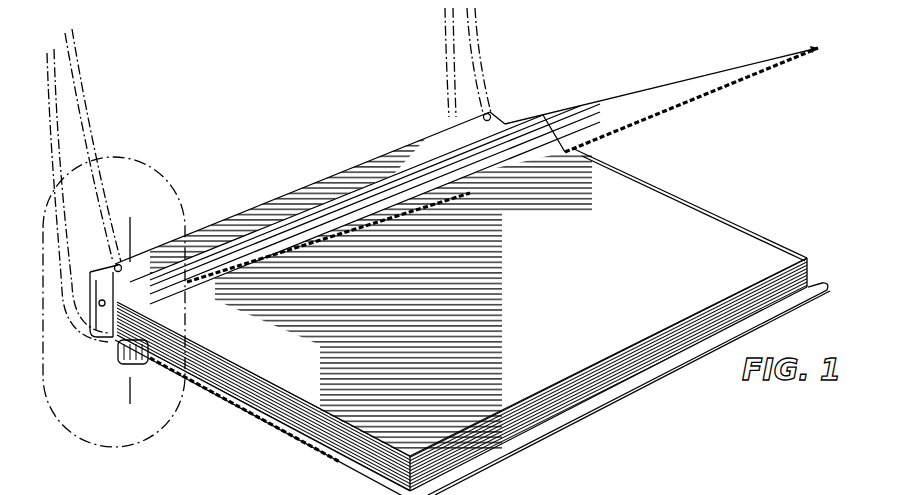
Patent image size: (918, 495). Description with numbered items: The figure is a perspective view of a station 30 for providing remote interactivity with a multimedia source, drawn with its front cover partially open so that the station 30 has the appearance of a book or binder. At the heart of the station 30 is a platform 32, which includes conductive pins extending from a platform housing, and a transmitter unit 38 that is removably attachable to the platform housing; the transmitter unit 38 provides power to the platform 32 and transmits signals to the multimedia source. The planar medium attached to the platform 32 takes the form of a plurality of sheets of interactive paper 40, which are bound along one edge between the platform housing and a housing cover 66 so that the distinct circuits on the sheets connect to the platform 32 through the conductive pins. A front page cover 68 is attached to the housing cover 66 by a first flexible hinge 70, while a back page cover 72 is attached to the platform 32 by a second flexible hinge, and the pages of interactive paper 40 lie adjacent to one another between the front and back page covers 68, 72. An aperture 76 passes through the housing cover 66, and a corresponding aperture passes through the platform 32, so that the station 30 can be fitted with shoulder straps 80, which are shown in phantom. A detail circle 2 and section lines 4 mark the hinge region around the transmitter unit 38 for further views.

The detail area 2 is at (168, 420).
The section line 4 is at (152, 222).
The station 30 is at (658, 63).
The platform 32 is at (251, 200).
The transmitter unit 38 is at (110, 370).
The sheets of interactive paper 40 is at (622, 342).
The housing cover 66 is at (440, 140).
The front page cover 68 is at (782, 66).
The first flexible hinge 70 is at (518, 124).
The back page cover 72 is at (806, 292).
The aperture 76 is at (488, 112).
The shoulder straps 80 is at (100, 96).